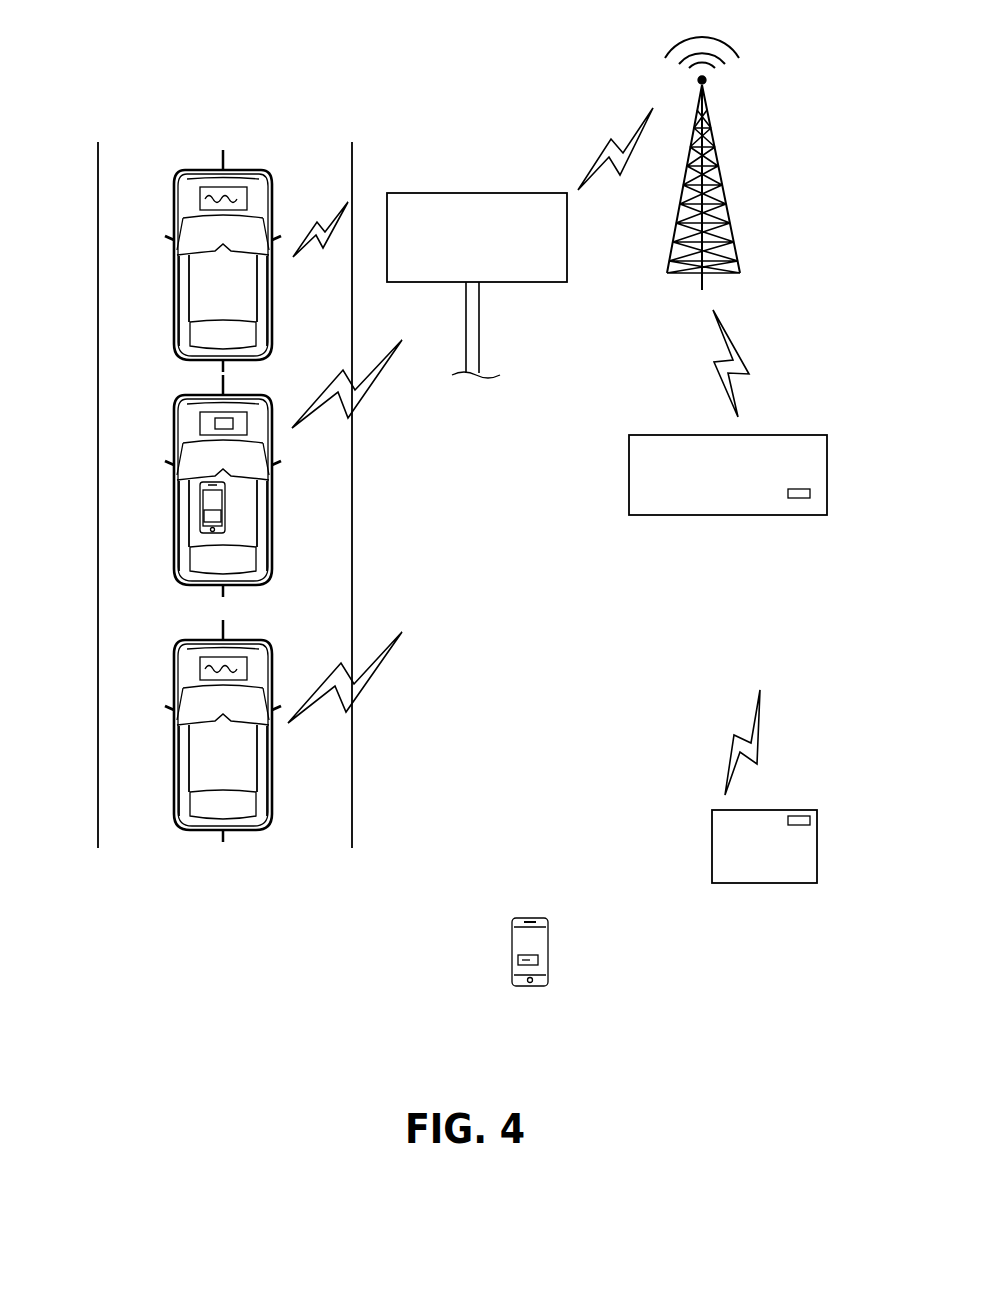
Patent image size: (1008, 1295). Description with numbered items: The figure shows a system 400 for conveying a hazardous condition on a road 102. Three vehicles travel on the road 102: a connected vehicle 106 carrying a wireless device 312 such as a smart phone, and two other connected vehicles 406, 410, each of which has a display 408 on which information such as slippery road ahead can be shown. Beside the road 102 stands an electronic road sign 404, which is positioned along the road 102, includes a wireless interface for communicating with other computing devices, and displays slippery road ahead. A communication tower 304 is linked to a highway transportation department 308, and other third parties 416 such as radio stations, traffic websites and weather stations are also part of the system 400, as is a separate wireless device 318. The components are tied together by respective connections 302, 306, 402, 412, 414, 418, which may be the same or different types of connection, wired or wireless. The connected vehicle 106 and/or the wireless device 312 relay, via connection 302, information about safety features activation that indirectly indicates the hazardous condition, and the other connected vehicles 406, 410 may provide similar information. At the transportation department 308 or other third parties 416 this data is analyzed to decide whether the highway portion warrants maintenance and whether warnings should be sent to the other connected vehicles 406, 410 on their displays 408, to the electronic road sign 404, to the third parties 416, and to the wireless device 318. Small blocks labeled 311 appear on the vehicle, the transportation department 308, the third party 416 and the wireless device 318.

The system 400 is at (428, 32).
The road 102 is at (318, 540).
The connected vehicle 106 is at (175, 550).
The connection 302 is at (386, 368).
The communication tower 304 is at (712, 160).
The connection 306 is at (738, 350).
The highway transportation department 308 is at (730, 516).
The software application / data 311 is at (233, 423).
The wireless device 312 is at (203, 505).
The wireless device 318 is at (200, 423).
The connection 402 is at (630, 137).
The electronic road sign 404 is at (535, 283).
The other connected vehicle 406 is at (247, 835).
The display 408 is at (200, 198).
The other connected vehicle 410 is at (243, 172).
The connection 412 is at (333, 238).
The connection 414 is at (375, 670).
The other third parties 416 is at (770, 883).
The connection 418 is at (757, 748).